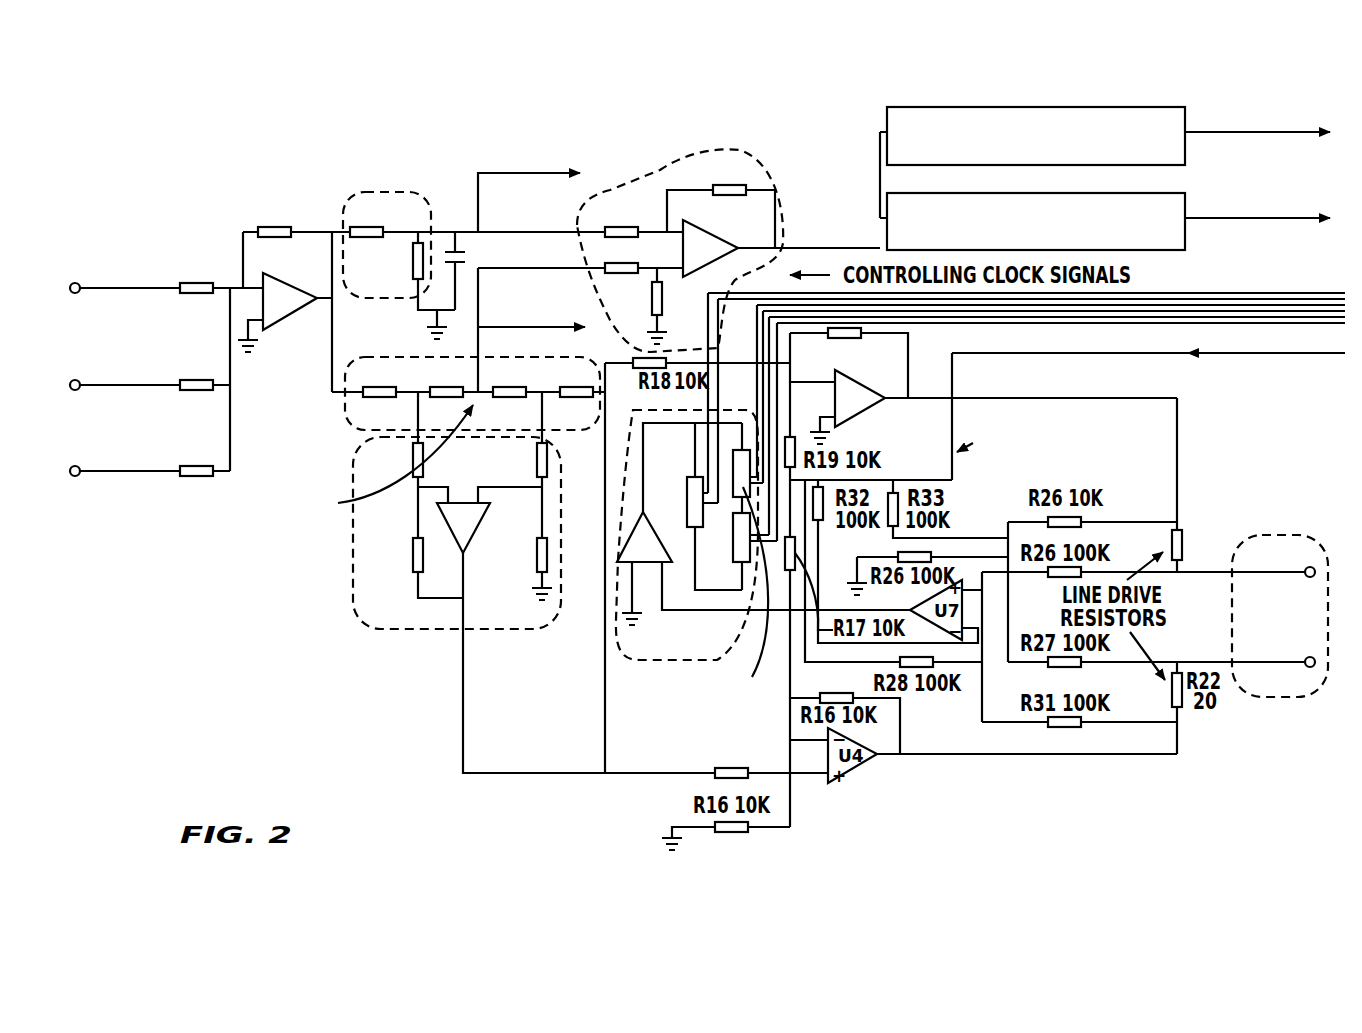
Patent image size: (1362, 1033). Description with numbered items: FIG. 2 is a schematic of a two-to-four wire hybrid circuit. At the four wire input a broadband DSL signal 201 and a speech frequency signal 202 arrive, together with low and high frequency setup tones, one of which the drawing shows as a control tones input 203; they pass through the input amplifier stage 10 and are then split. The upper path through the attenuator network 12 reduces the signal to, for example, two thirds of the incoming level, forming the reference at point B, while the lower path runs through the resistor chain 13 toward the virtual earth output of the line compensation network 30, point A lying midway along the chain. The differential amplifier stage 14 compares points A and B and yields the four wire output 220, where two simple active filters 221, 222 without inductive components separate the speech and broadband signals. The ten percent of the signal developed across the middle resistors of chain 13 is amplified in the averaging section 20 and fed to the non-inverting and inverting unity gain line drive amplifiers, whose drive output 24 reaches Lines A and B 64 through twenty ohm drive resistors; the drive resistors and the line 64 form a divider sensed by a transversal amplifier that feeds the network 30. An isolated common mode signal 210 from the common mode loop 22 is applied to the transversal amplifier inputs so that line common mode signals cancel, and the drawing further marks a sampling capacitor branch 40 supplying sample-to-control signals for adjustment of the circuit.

The input summing amplifier U1 10 is at (287, 320).
The input attenuator network R1 R2 12 is at (375, 190).
The resistor divider network R3-R6 13 is at (345, 420).
The differential amplifier stage U2 14 is at (640, 192).
The averaging amplifier network U3 20 is at (357, 600).
The isolated common mode signal loop 22 is at (1180, 410).
The line drive output conductor 24 is at (1112, 757).
The line compensation network 30 is at (688, 665).
The sampling capacitor C1 40 is at (493, 287).
The UTP line (Lines A, B) 64 is at (1272, 700).
The broadband DSL signal 201 is at (76, 294).
The speech frequency signal 202 is at (76, 380).
The control tones input 203 is at (76, 466).
The isolated common mode signal 210 is at (1248, 355).
The four wire output 220 is at (822, 140).
The active filter 221 is at (1047, 107).
The active filter 222 is at (1143, 250).